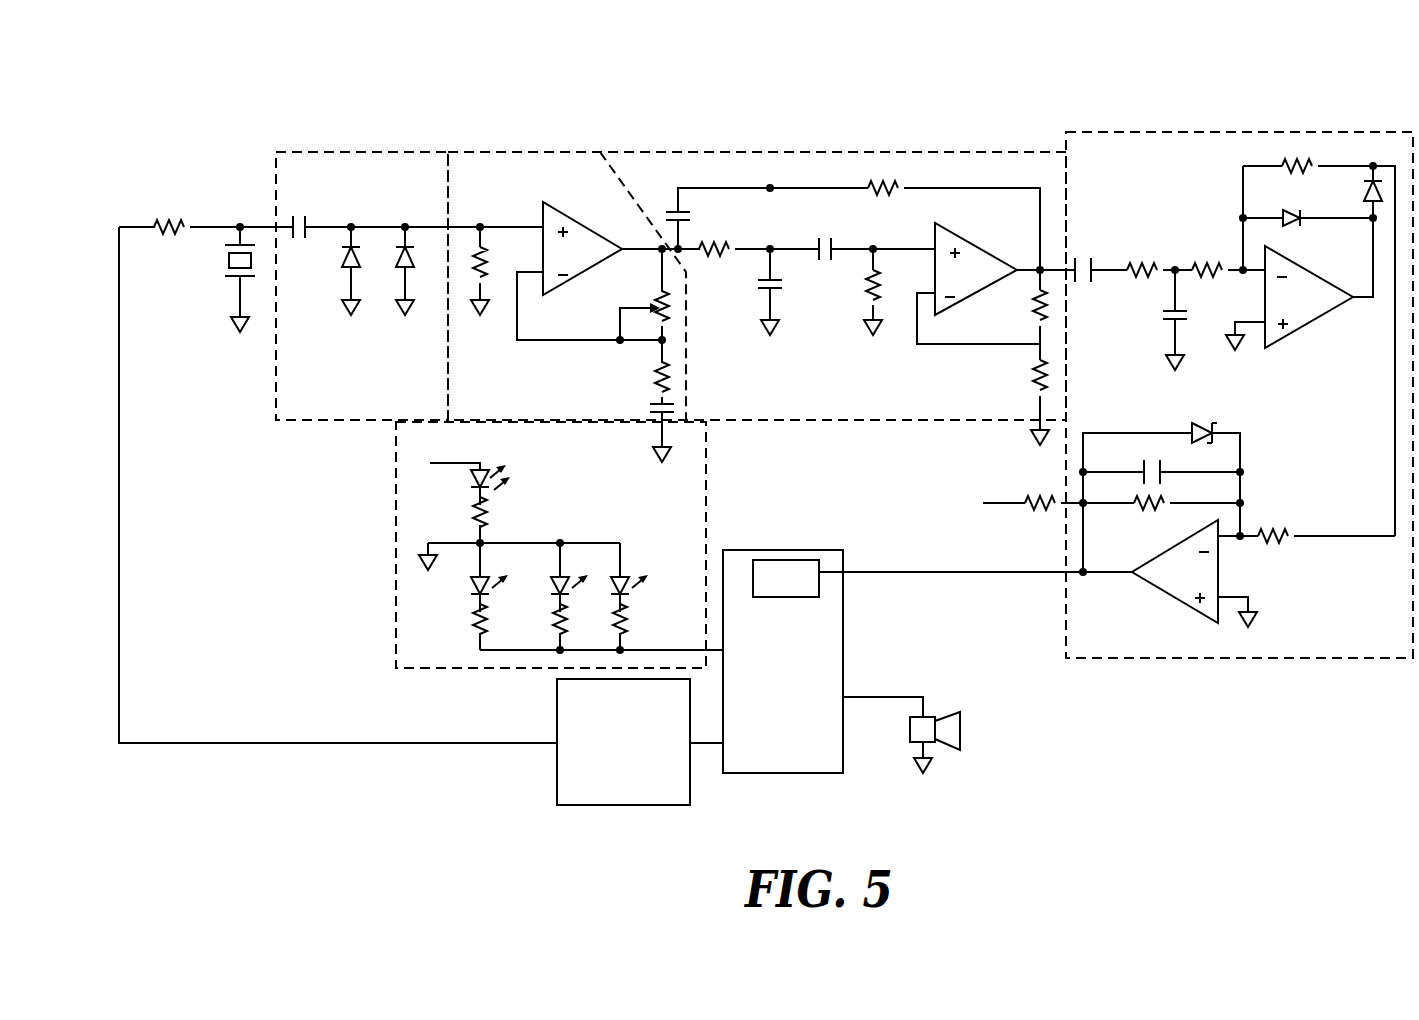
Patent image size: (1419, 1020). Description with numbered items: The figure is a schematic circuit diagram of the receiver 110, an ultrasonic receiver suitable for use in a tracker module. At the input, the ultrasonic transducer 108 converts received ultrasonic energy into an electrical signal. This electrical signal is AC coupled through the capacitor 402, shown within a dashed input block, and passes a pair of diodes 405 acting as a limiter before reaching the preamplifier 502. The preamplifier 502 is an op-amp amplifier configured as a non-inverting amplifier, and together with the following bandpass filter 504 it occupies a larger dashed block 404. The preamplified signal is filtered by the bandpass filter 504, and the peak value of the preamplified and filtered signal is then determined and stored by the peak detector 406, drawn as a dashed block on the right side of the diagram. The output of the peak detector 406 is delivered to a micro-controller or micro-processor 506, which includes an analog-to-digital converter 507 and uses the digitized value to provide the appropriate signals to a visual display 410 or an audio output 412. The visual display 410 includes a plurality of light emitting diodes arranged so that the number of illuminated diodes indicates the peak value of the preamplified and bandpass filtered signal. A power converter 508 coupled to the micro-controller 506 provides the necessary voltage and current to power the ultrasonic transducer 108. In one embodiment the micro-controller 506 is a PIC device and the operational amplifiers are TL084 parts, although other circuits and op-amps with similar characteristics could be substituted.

The ultrasonic transducer 108 is at (158, 240).
The receiver 110 is at (1348, 67).
The capacitor 402 is at (300, 213).
The amplifier and filter stage 404 is at (633, 151).
The protection diodes 405 is at (415, 317).
The peak detector 406 is at (1145, 177).
The visual display 410 is at (600, 497).
The audio output 412 is at (1005, 807).
The preamplifier 502 is at (566, 409).
The bandpass filter 504 is at (890, 411).
The micro-controller or micro-processor 506 is at (802, 747).
The analog-to-digital converter 507 is at (795, 560).
The power converter 508 is at (648, 794).